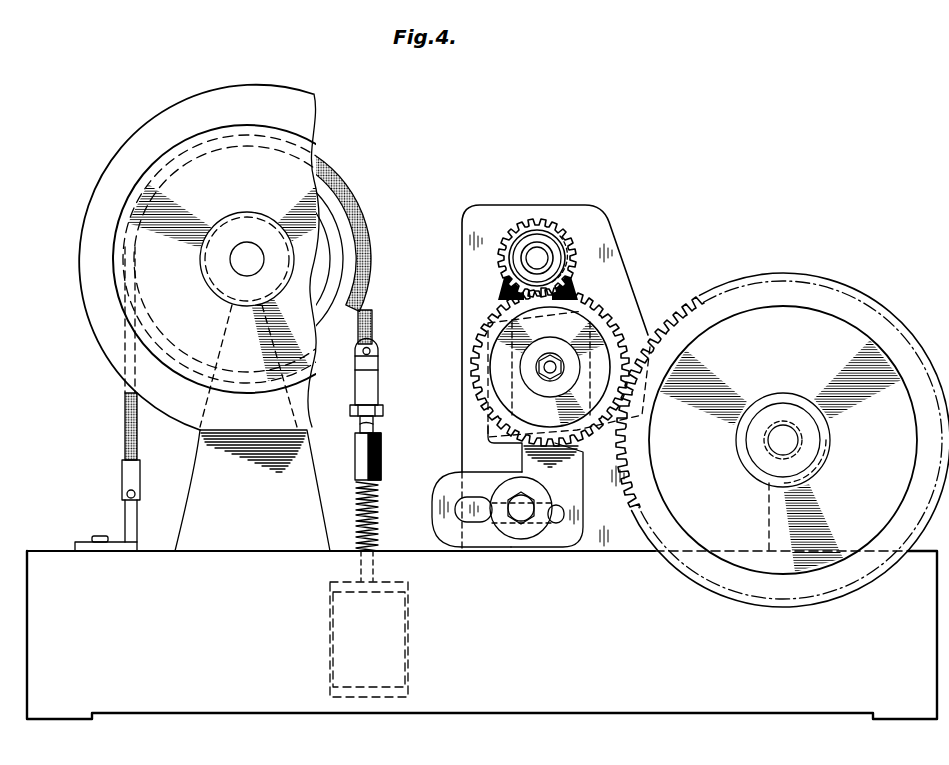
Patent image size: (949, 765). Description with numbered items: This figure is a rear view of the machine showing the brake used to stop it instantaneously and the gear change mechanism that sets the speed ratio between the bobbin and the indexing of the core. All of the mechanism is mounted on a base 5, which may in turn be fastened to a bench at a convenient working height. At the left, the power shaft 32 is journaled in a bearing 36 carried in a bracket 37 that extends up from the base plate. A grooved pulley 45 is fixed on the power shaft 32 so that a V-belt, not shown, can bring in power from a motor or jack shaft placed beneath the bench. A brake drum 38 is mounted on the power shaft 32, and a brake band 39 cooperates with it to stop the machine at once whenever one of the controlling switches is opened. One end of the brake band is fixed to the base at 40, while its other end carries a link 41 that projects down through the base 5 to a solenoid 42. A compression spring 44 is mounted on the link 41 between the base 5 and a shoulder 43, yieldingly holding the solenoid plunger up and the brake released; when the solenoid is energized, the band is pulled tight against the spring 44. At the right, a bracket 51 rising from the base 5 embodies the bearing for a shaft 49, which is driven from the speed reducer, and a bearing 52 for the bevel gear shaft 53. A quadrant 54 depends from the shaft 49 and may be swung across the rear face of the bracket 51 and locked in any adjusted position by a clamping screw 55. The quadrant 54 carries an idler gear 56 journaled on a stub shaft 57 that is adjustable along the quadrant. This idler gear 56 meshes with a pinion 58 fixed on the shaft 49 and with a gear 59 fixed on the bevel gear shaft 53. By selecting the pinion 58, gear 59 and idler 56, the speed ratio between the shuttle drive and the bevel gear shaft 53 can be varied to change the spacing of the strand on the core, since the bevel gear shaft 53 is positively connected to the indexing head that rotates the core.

The base 5 is at (42, 551).
The power shaft 32 is at (238, 268).
The bearing 36 is at (233, 213).
The bracket 37 is at (206, 471).
The brake drum 38 is at (340, 190).
The brake band 39 is at (375, 229).
The fixed end of brake band 40 is at (120, 488).
The link 41 is at (378, 426).
The solenoid 42 is at (409, 621).
The shoulder 43 is at (382, 479).
The compression spring 44 is at (379, 536).
The grooved pulley 45 is at (229, 86).
The shaft 49 is at (567, 234).
The bracket 51 is at (627, 277).
The bearing 52 is at (789, 394).
The bevel gear shaft 53 is at (802, 438).
The quadrant 54 is at (584, 506).
The clamping screw 55 is at (514, 524).
The idler gear 56 is at (596, 298).
The stub shaft 57 is at (555, 358).
The pinion 58 is at (548, 226).
The gear 59 is at (798, 284).